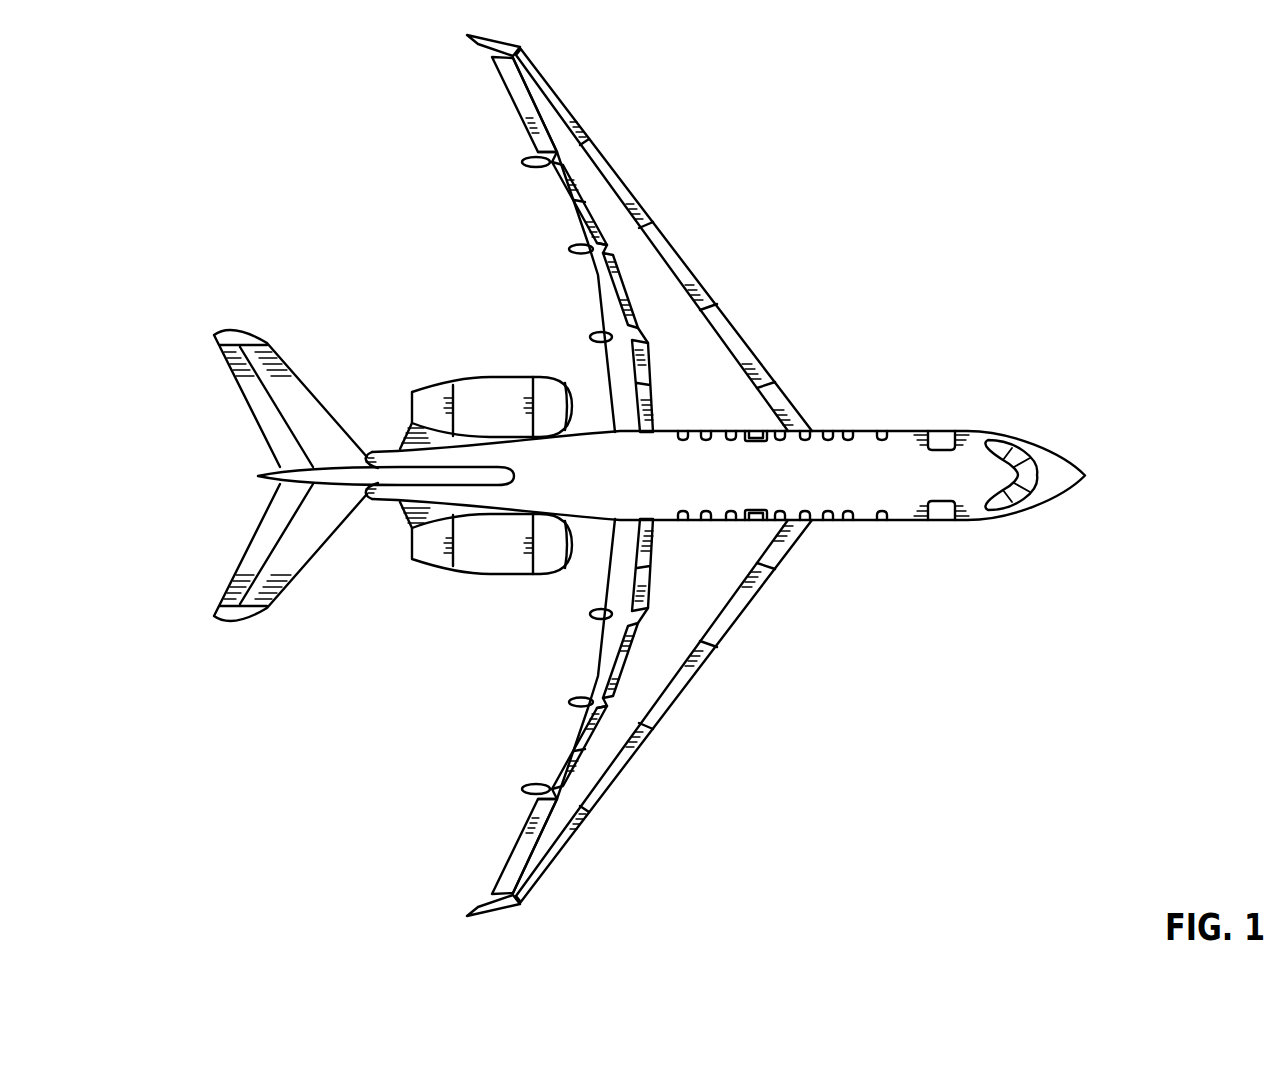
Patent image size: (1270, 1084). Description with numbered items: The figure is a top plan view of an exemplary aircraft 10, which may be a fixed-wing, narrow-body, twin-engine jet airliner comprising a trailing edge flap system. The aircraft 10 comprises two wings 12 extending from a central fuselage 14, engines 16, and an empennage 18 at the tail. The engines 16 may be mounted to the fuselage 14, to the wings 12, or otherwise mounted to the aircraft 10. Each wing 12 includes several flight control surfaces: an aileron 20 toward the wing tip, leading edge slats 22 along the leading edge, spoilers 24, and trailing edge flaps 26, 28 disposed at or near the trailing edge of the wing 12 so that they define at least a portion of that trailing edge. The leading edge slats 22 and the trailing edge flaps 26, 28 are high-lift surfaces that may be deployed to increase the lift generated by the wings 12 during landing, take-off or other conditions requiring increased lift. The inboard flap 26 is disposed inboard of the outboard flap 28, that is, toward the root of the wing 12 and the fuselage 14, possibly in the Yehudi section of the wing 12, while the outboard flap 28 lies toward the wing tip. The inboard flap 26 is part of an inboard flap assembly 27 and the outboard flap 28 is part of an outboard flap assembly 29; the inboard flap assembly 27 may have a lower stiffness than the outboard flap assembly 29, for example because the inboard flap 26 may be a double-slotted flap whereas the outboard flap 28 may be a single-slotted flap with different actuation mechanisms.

The aircraft 10 is at (812, 79).
The wings 12 is at (702, 240).
The fuselage 14 is at (906, 490).
The engines 16 is at (413, 404).
The empennage 18 is at (245, 306).
The aileron 20 is at (517, 97).
The leading edge slats 22 is at (739, 347).
The spoilers 24 is at (612, 323).
The inboard trailing edge flap 26 is at (623, 373).
The inboard flap assembly 27 is at (642, 475).
The outboard trailing edge flap 28 is at (599, 268).
The outboard flap assembly 29 is at (567, 475).